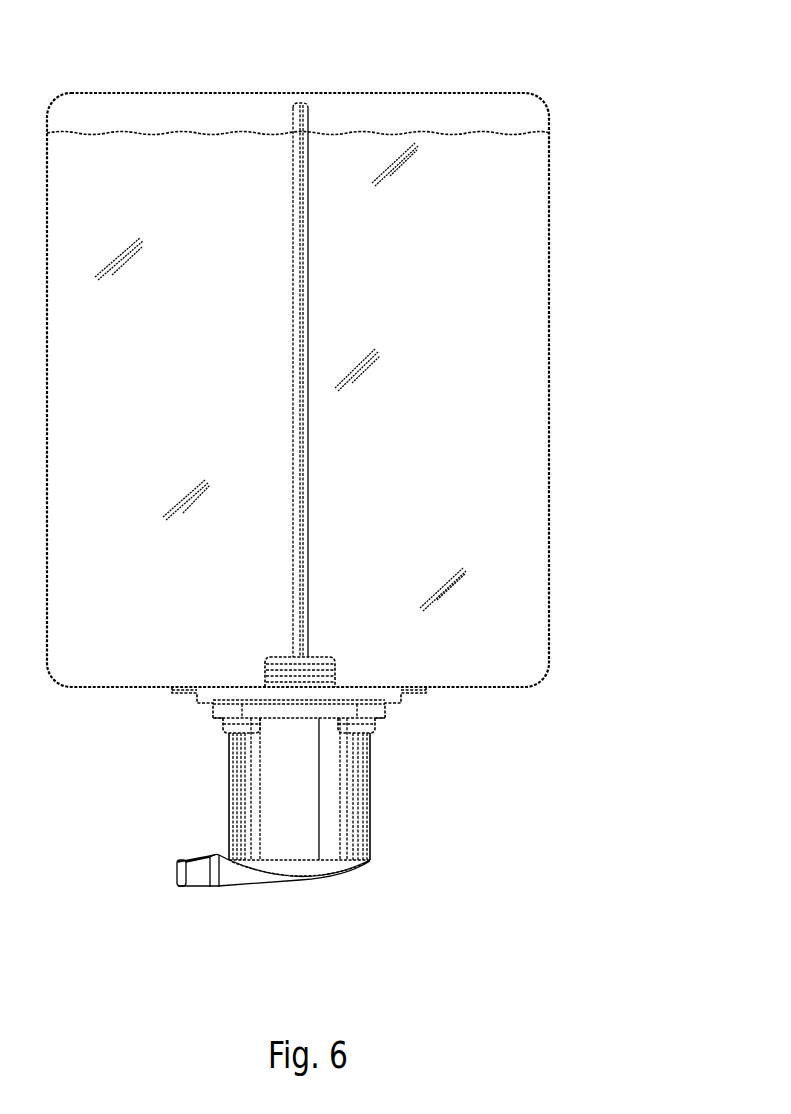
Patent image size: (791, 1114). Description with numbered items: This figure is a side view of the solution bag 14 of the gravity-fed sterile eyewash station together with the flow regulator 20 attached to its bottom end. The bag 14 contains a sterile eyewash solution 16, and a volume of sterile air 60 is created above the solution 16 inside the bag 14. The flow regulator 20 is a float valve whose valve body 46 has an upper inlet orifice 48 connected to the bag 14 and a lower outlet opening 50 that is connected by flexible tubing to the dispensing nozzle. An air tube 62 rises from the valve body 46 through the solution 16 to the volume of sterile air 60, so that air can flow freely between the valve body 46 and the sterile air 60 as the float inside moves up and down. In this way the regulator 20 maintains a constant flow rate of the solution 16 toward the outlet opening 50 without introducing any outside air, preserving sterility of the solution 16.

The solution bag 14 is at (553, 287).
The sterile eyewash solution 16 is at (492, 203).
The flow regulator 20 is at (280, 831).
The valve body 46 is at (310, 830).
The upper inlet orifice 48 is at (313, 655).
The lower outlet opening 50 is at (197, 880).
The volume of sterile air 60 is at (392, 133).
The air tube 62 is at (308, 408).